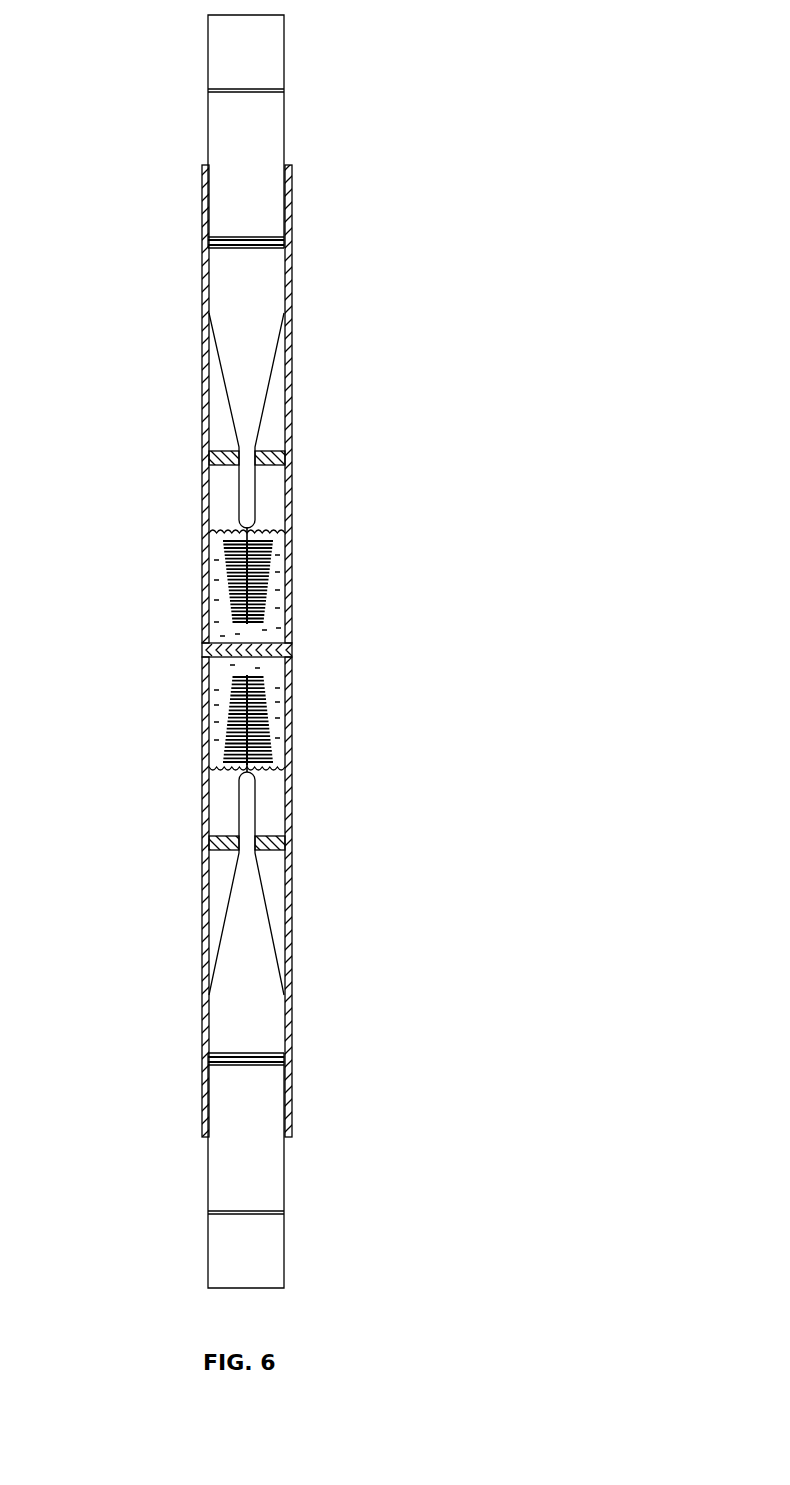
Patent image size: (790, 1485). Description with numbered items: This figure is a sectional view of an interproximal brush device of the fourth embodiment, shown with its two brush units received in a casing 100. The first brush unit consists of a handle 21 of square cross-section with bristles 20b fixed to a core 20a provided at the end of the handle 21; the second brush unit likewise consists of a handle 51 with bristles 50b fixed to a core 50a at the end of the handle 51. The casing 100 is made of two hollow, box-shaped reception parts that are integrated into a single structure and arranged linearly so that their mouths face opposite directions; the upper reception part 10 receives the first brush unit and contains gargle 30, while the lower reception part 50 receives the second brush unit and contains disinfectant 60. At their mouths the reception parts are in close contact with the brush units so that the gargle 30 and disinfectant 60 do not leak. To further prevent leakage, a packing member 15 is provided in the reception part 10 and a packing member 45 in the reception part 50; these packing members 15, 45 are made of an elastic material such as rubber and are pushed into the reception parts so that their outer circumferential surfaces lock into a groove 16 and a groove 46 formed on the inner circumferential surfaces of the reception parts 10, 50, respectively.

The casing 100 is at (322, 651).
The reception part 10 is at (291, 303).
The handle 21 is at (247, 133).
The packing member 15 is at (275, 457).
The groove 16 is at (203, 458).
The core 20a is at (225, 542).
The bristles 20b is at (233, 583).
The gargle 30 is at (225, 628).
The disinfectant 60 is at (293, 620).
The bristles 50b is at (267, 703).
The core 50a is at (267, 753).
The packing member 45 is at (292, 847).
The groove 46 is at (205, 840).
The lower container body 50 is at (287, 938).
The handle 51 is at (248, 1152).